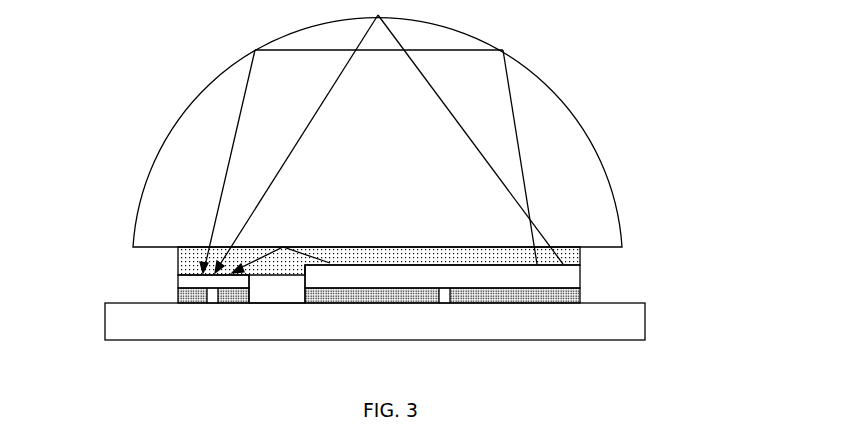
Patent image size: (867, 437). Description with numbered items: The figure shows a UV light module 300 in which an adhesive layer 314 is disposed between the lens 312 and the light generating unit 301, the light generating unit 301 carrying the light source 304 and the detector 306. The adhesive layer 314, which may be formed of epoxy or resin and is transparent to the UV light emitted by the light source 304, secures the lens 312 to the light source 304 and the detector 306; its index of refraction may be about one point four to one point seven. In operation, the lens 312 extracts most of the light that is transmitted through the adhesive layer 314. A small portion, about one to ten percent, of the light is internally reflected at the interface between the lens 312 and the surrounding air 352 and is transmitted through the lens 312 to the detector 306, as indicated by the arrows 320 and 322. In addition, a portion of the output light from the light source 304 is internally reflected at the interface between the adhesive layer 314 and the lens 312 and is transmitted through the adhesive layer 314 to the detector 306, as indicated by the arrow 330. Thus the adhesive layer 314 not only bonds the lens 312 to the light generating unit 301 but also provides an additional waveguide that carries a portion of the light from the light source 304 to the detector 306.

The UV light module 300 is at (42, 30).
The lens 312 is at (163, 164).
The air 352 is at (612, 110).
The arrow 320 is at (308, 117).
The arrow 322 is at (517, 127).
The arrow 330 is at (305, 247).
The adhesive layer 314 is at (456, 258).
The detector 306 is at (178, 287).
The light source 304 is at (542, 290).
The light generating unit 301 is at (673, 348).